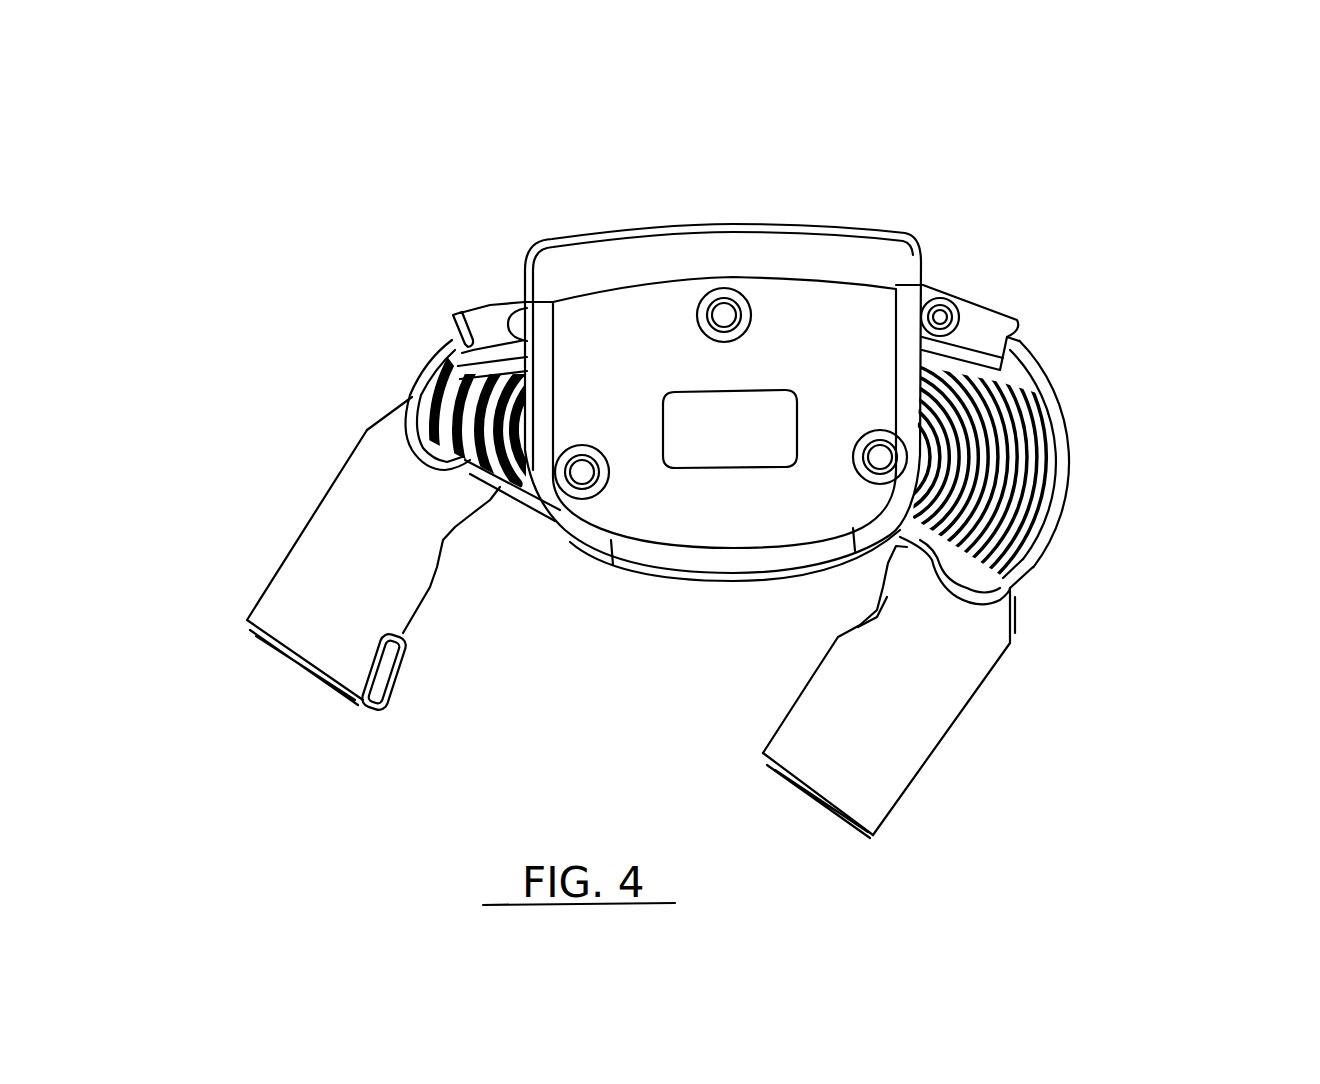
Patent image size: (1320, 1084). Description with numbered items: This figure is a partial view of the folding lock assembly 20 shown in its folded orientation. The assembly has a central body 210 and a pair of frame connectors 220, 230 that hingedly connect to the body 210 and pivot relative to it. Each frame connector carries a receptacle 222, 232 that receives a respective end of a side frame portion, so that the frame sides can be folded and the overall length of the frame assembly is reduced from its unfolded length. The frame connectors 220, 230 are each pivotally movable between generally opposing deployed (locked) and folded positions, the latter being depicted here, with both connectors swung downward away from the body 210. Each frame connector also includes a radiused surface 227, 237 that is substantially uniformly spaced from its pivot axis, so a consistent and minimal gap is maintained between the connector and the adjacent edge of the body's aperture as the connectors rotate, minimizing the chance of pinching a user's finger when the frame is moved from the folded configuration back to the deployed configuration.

The folding lock assembly 20 is at (922, 152).
The body 210 is at (878, 258).
The frame connector 220 is at (1102, 545).
The receptacle 222 is at (822, 802).
The radiused surface 227 is at (1063, 410).
The frame connector 230 is at (387, 353).
The receptacle 232 is at (278, 665).
The radiused surface 237 is at (408, 380).